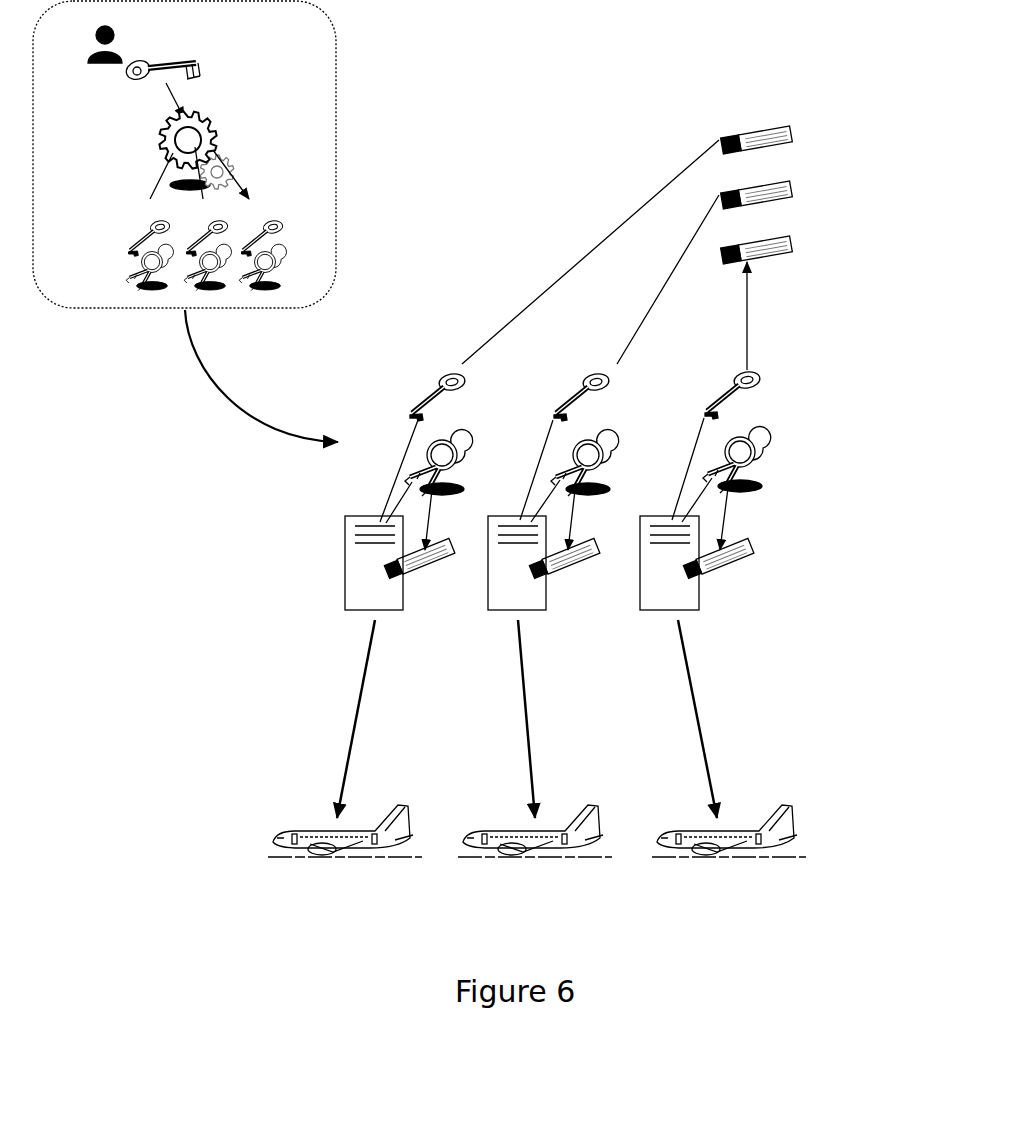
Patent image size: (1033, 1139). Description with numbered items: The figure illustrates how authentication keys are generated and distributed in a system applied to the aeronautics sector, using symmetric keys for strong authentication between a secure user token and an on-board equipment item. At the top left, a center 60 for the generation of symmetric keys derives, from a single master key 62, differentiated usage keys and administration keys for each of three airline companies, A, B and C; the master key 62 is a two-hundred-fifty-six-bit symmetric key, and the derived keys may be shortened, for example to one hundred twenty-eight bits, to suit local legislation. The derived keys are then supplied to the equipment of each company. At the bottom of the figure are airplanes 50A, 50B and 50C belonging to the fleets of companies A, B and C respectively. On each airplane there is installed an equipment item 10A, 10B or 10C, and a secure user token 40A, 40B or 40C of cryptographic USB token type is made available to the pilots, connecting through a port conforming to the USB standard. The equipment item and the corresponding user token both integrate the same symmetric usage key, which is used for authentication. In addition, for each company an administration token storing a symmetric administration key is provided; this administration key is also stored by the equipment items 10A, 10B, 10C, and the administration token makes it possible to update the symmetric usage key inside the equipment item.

The center for generation of symmetric keys 60 is at (338, 150).
The master key 62 is at (198, 60).
The equipment item 10A is at (363, 590).
The equipment item 10B is at (500, 595).
The equipment item 10C is at (652, 595).
The secure user token 40A is at (428, 583).
The secure user token 40B is at (570, 585).
The secure user token 40C is at (730, 585).
The airplane 50A is at (287, 842).
The airplane 50B is at (477, 850).
The airplane 50C is at (668, 842).